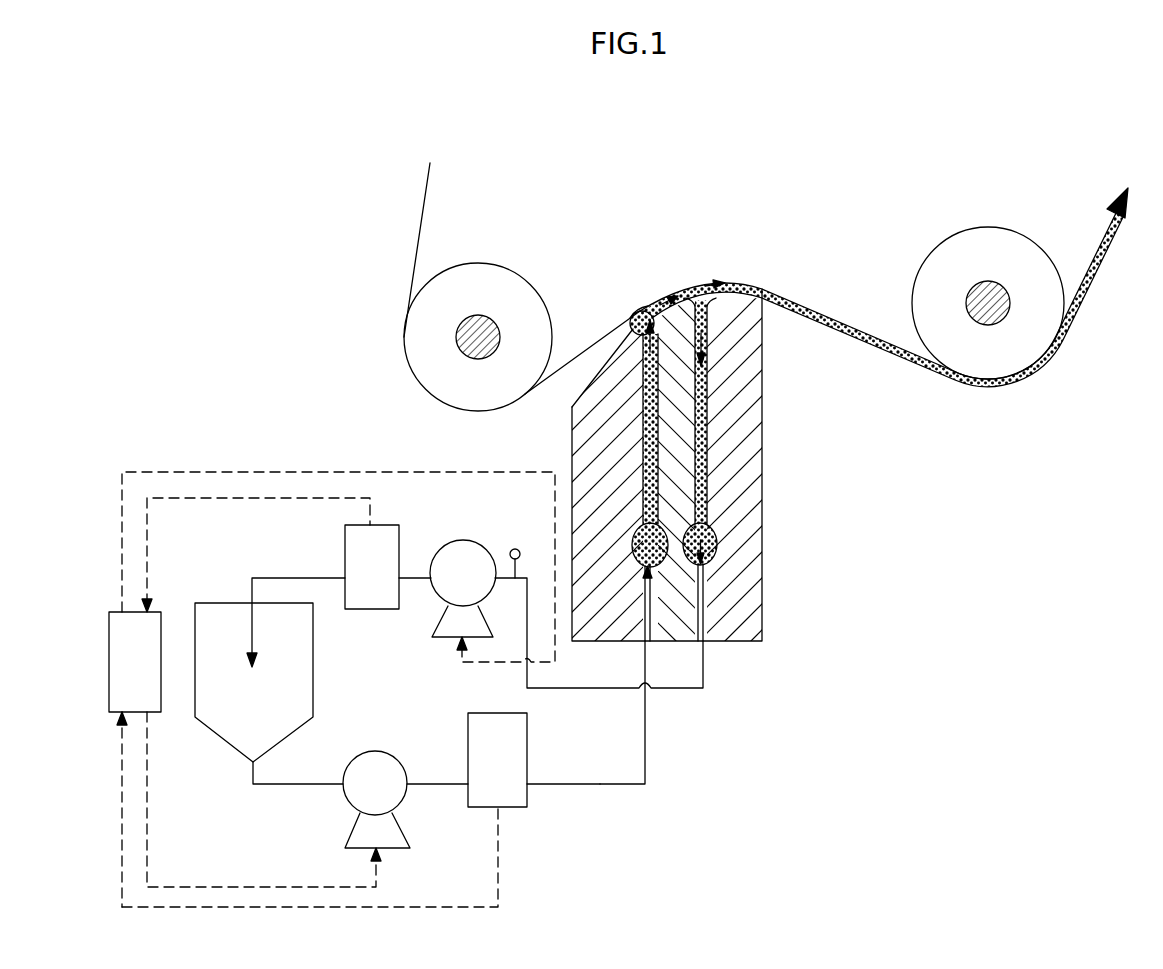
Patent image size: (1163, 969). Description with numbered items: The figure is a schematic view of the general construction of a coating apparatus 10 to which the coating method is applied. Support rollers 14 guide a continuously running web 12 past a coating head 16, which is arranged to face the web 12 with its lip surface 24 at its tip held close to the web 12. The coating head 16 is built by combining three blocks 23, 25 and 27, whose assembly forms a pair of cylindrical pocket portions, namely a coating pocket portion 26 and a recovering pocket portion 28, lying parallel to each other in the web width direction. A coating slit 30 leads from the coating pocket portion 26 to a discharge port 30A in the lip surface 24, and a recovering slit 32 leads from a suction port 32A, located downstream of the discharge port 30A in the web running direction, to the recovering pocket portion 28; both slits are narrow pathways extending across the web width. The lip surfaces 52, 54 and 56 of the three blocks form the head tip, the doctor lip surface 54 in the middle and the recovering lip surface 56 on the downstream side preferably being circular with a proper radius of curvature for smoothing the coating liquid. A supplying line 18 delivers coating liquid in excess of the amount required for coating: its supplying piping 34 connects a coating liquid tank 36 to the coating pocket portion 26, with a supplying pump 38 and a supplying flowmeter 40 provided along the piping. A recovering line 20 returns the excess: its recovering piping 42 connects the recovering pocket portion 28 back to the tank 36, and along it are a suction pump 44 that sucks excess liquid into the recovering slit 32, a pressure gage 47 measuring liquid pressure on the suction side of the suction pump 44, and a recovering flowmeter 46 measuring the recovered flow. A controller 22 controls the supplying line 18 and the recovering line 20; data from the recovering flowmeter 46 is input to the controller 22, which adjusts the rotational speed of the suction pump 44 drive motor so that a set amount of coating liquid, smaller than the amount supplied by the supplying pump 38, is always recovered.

The coating apparatus 10 is at (812, 208).
The web 12 is at (422, 218).
The support rollers 14 is at (480, 285).
The coating head 16 is at (770, 493).
The supplying line 18 is at (662, 745).
The recovering line 20 is at (326, 535).
The controller 22 is at (128, 658).
The block 23 is at (592, 431).
The lip surface 24 is at (688, 300).
The block 25 is at (683, 384).
The coating pocket portion 26 is at (632, 548).
The block 27 is at (740, 598).
The recovering pocket portion 28 is at (718, 541).
The coating slit 30 is at (648, 470).
The discharge port 30A is at (638, 318).
The recovering slit 32 is at (702, 432).
The suction port 32A is at (703, 298).
The supplying piping 34 is at (588, 786).
The coating liquid tank 36 is at (300, 650).
The supplying pump 38 is at (372, 772).
The supplying flowmeter 40 is at (506, 752).
The recovering piping 42 is at (282, 578).
The suction pump 44 is at (455, 567).
The recovering flowmeter 46 is at (374, 535).
The pressure gage 47 is at (512, 548).
The lip surface 52 is at (616, 362).
The doctor lip surface 54 is at (655, 302).
The recovering lip surface 56 is at (738, 285).